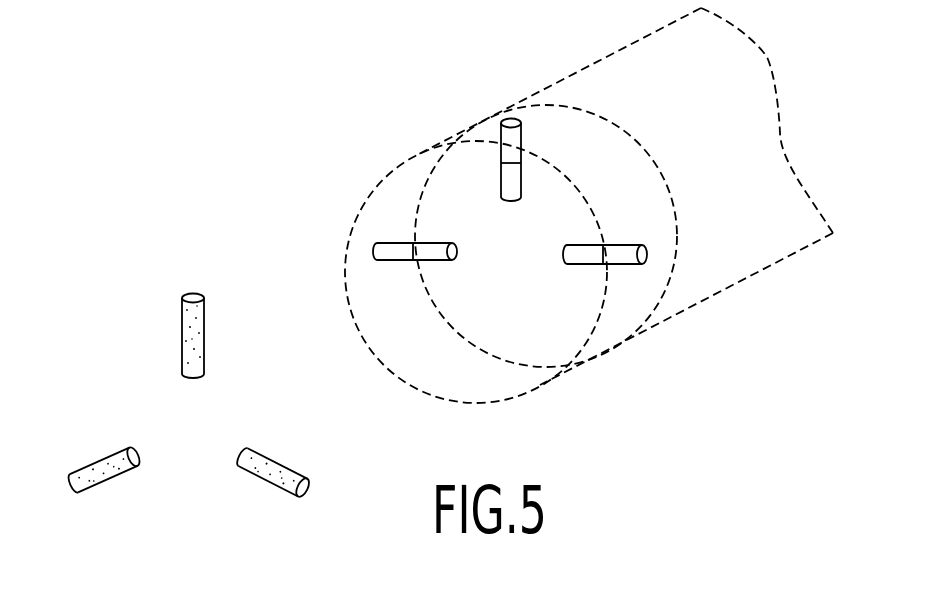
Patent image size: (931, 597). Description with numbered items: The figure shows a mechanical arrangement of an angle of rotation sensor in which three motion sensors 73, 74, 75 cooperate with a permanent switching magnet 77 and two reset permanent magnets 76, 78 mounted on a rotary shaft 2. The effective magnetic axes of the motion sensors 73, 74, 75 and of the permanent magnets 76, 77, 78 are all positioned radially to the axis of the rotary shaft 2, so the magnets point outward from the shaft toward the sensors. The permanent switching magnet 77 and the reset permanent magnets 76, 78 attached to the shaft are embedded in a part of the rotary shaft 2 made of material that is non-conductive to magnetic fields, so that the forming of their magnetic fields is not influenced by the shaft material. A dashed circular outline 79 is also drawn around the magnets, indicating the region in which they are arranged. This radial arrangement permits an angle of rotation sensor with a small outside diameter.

The rotary shaft 2 is at (755, 80).
The motion sensor 73 is at (182, 342).
The motion sensor 74 is at (97, 477).
The motion sensor 75 is at (273, 463).
The reset permanent magnet 76 is at (387, 248).
The permanent switching magnet 77 is at (507, 177).
The reset permanent magnet 78 is at (585, 260).
The circular opening 79 is at (573, 117).